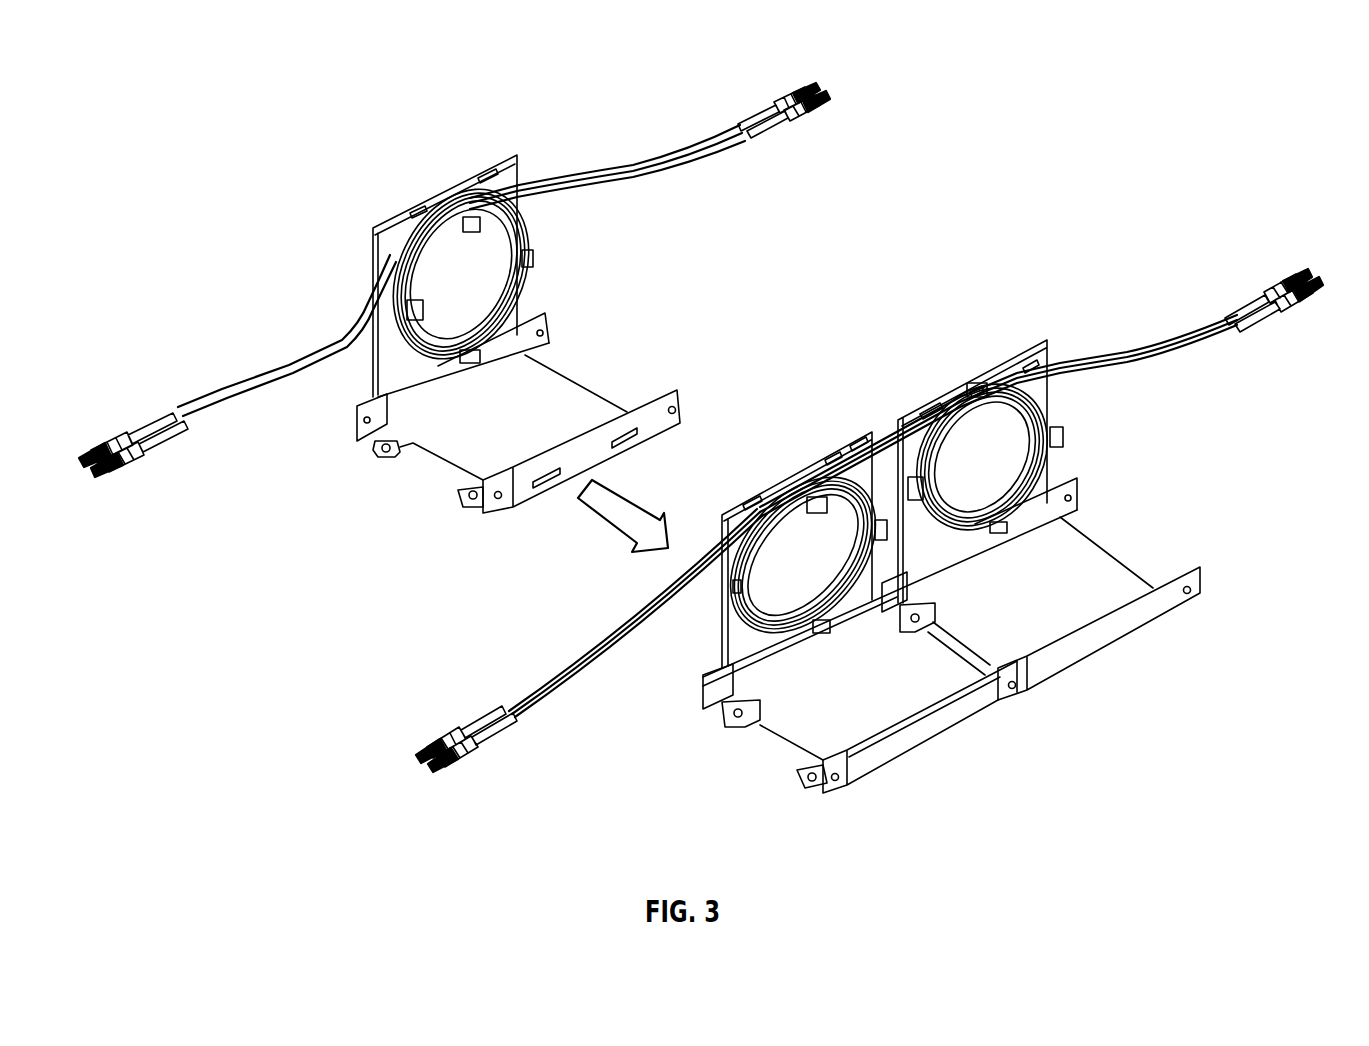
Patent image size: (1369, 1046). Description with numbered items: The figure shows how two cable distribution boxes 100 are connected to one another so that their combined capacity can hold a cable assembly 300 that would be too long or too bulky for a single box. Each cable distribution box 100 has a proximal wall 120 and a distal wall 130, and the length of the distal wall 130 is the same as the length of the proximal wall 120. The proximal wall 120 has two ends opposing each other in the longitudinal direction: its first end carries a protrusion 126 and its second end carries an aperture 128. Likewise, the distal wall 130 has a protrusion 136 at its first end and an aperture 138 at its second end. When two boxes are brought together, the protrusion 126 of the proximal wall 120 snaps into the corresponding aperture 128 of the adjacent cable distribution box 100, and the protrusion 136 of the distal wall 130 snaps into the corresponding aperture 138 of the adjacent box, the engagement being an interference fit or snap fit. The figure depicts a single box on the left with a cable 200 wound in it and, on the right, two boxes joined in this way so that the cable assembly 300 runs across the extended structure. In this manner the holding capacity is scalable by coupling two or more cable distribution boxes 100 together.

The cable distribution box 100 is at (440, 188).
The proximal wall 120 is at (456, 382).
The protrusion 126 is at (348, 423).
The aperture 128 is at (548, 332).
The distal wall 130 is at (598, 450).
The protrusion 136 is at (499, 500).
The aperture 138 is at (678, 410).
The first optical fiber cable 200 is at (680, 148).
The cable assembly 300 is at (1158, 350).